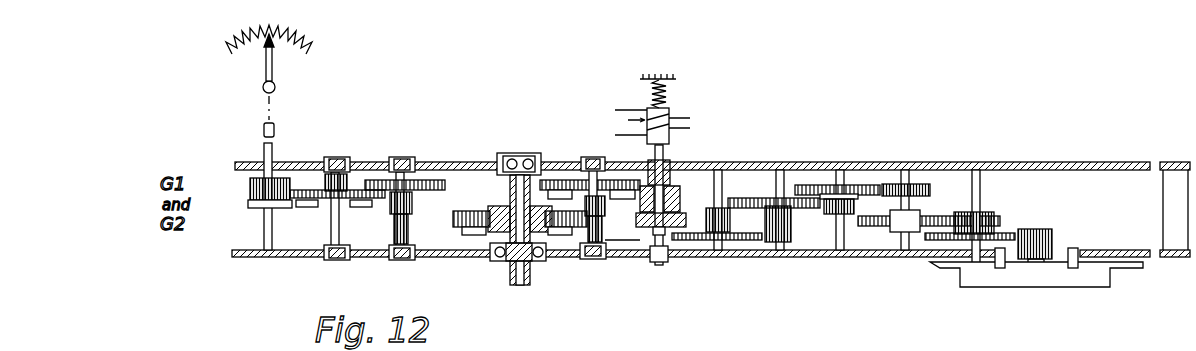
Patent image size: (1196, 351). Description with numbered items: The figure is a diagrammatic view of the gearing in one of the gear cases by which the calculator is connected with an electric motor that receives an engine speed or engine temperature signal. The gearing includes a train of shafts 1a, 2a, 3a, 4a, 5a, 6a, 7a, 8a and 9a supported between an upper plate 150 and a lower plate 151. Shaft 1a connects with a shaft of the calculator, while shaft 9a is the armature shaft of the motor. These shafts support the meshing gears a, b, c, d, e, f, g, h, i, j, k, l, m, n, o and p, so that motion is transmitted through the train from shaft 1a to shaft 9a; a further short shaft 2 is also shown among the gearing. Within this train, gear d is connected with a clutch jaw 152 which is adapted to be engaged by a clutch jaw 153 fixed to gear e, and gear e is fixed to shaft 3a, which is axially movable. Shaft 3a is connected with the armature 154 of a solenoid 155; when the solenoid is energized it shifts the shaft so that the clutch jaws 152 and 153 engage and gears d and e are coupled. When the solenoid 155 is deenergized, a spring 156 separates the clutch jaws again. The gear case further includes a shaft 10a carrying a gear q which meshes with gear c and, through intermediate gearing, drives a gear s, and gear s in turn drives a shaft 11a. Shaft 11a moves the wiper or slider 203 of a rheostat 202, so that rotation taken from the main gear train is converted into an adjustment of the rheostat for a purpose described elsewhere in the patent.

The plate 150 is at (1109, 160).
The plate 151 is at (1139, 248).
The clutch jaw 152 is at (680, 182).
The clutch jaw 153 is at (650, 248).
The armature 154 is at (668, 112).
The solenoid 155 is at (670, 125).
The spring 156 is at (676, 80).
The rheostat 202 is at (305, 42).
The wiper or slider 203 is at (267, 70).
The shaft 1a is at (526, 266).
The shaft 2 is at (603, 240).
The shaft 2a is at (404, 240).
The shaft 3a is at (660, 260).
The shaft 4a is at (714, 250).
The shaft 5a is at (780, 250).
The shaft 6a is at (840, 250).
The shaft 7a is at (904, 250).
The shaft 8a is at (976, 268).
The shaft 9a is at (1036, 270).
The shaft 10a is at (339, 238).
The shaft 11a is at (263, 238).
The gear a is at (453, 215).
The gear b is at (603, 215).
The gear c is at (430, 180).
The gear d is at (672, 185).
The gear e is at (667, 217).
The gear f is at (726, 220).
The gear g is at (760, 242).
The gear h is at (790, 225).
The gear i is at (765, 203).
The gear j is at (835, 213).
The gear k is at (810, 190).
The gear l is at (896, 184).
The gear m is at (929, 226).
The gear n is at (980, 216).
The gear o is at (1003, 236).
The gear p is at (1052, 232).
The gear q is at (325, 180).
The gear s is at (250, 194).